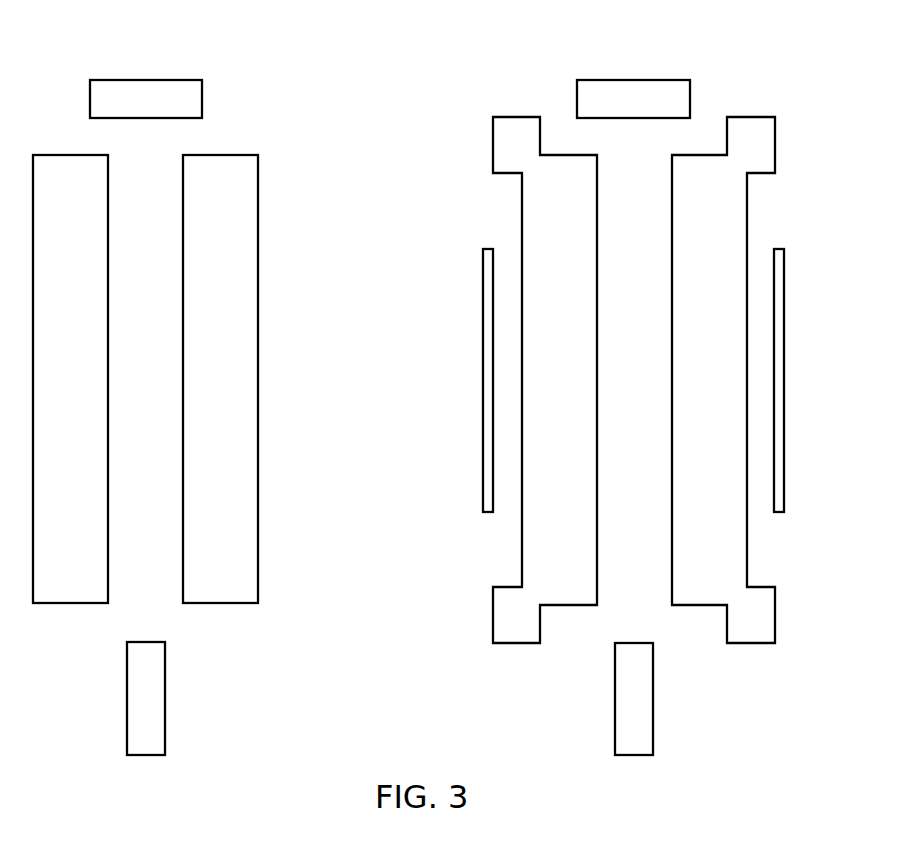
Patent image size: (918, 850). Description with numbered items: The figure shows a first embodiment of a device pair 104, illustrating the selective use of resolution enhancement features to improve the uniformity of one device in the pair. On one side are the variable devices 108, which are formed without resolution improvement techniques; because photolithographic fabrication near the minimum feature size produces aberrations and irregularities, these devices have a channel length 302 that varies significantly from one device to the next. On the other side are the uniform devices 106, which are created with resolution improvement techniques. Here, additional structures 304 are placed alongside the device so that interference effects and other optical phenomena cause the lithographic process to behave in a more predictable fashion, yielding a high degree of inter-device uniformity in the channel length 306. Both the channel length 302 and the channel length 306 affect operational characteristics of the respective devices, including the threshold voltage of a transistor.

The device pair 104 is at (89, 35).
The uniform devices 106 is at (708, 118).
The variable devices 108 is at (220, 117).
The channel length 302 is at (147, 582).
The additional structures 304 is at (490, 178).
The channel length 306 is at (633, 585).